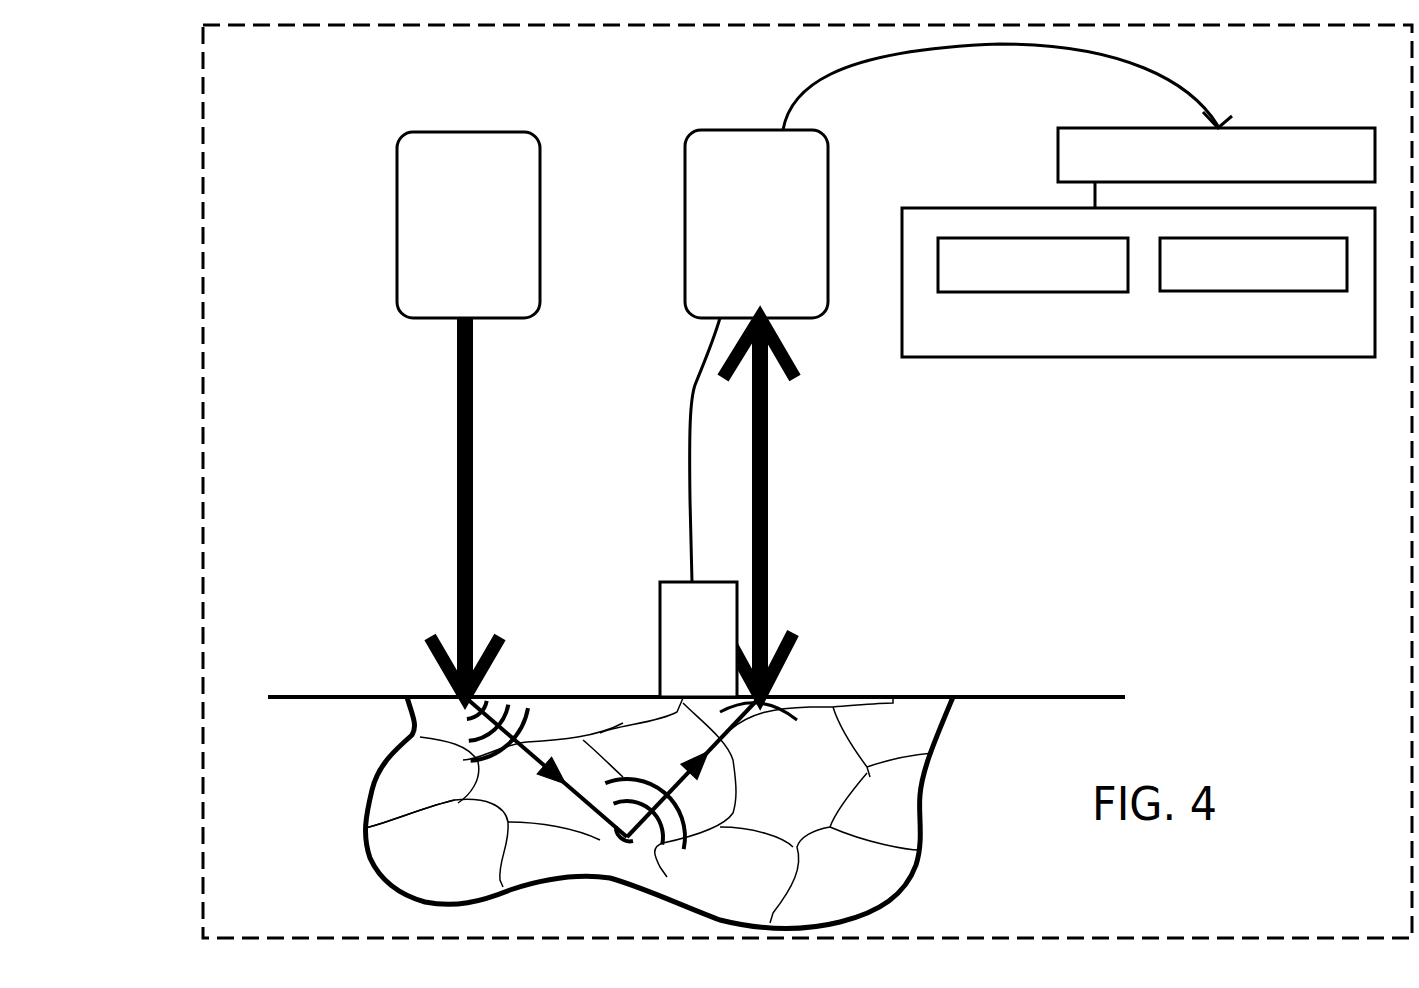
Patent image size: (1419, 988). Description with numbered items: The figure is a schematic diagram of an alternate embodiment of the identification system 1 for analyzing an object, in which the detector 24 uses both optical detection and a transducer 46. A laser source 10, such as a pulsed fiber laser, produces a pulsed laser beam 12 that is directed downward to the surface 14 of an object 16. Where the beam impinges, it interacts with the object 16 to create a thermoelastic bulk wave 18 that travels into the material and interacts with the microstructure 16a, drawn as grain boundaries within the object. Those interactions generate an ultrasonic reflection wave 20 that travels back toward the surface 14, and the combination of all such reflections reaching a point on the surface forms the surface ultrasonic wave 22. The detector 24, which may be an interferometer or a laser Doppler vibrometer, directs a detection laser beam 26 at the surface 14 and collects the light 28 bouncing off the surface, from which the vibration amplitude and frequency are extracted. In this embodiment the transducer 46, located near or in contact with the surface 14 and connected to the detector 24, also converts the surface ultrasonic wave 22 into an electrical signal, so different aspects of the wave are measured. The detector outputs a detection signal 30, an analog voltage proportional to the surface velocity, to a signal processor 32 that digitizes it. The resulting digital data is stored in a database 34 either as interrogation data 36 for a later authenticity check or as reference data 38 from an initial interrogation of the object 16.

The identification system 1 is at (200, 155).
The laser source 10 is at (447, 248).
The pulsed laser beam 12 is at (457, 497).
The surface 14 is at (347, 697).
The object 16 is at (332, 824).
The microstructure 16a is at (400, 813).
The thermoelastic bulk wave 18 is at (513, 695).
The ultrasonic reflection wave 20 is at (658, 800).
The surface ultrasonic wave 22 is at (793, 697).
The detector 24 is at (741, 248).
The detection laser beam 26 is at (767, 635).
The light 28 is at (768, 380).
The detection signal 30 is at (808, 87).
The signal processor 32 is at (1199, 169).
The database 34 is at (1124, 339).
The interrogation data 36 is at (1017, 279).
The reference data 38 is at (1231, 279).
The transducer 46 is at (681, 651).